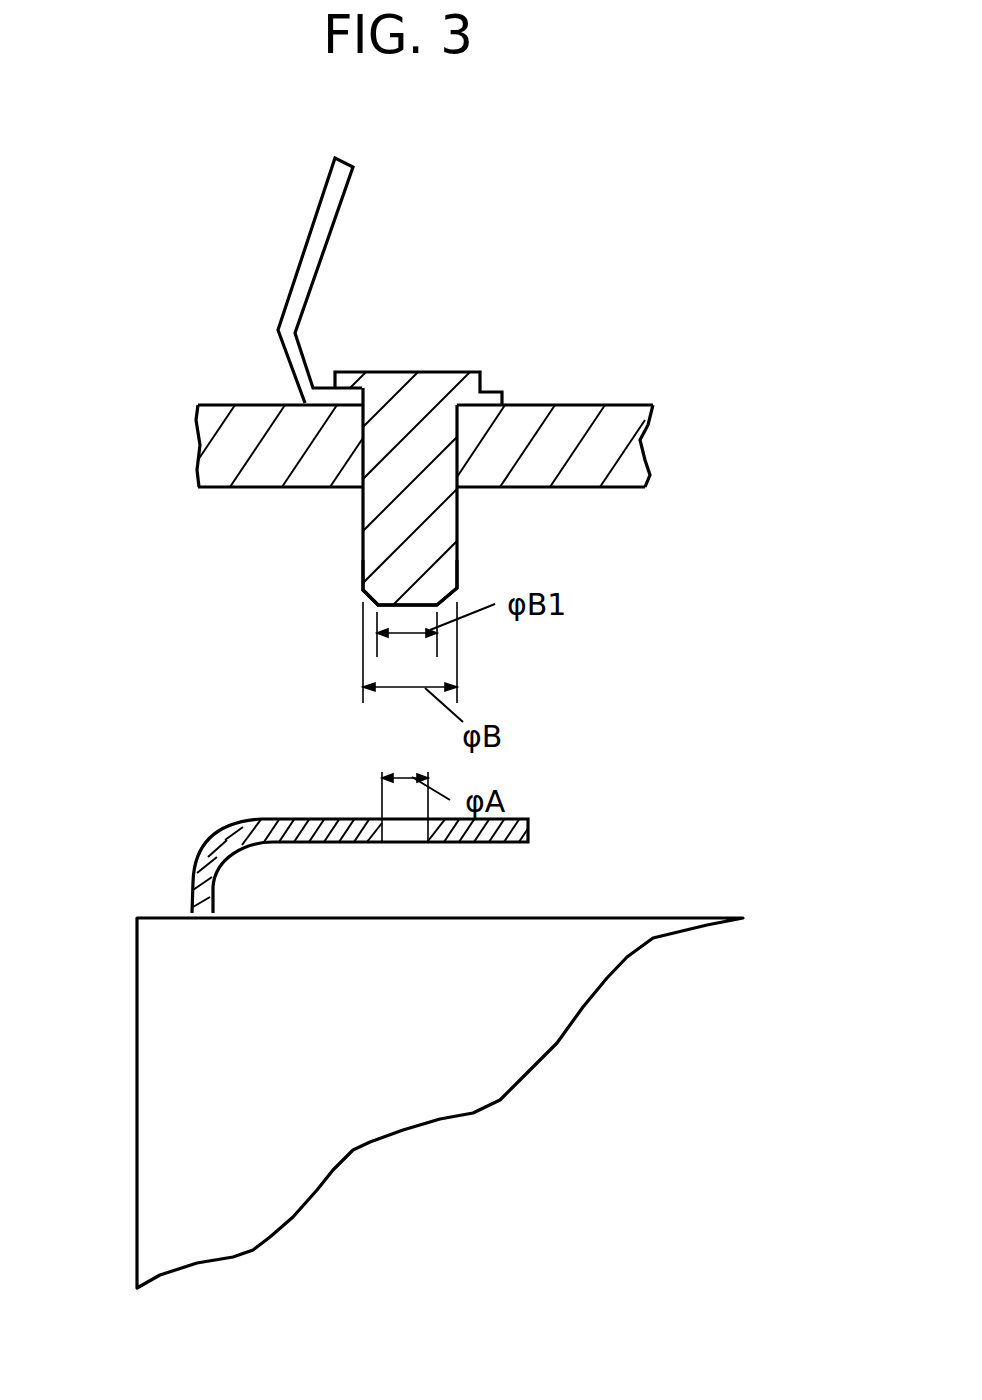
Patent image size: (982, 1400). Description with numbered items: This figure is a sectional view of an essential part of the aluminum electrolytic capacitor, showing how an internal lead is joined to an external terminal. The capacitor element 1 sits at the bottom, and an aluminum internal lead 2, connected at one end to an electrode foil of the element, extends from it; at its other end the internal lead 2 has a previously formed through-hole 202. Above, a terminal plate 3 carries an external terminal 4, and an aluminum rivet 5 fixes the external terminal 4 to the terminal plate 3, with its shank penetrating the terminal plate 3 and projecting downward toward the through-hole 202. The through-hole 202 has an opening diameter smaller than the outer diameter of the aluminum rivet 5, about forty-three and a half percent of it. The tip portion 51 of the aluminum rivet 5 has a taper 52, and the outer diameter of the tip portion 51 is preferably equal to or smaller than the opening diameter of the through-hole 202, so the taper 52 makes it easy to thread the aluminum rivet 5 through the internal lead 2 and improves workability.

The capacitor element 1 is at (192, 1155).
The internal lead 2 is at (198, 863).
The terminal plate 3 is at (642, 428).
The external terminal 4 is at (318, 208).
The aluminum rivet 5 is at (387, 385).
The tip portion 51 is at (455, 577).
The taper 52 is at (365, 590).
The through-hole 202 is at (381, 818).